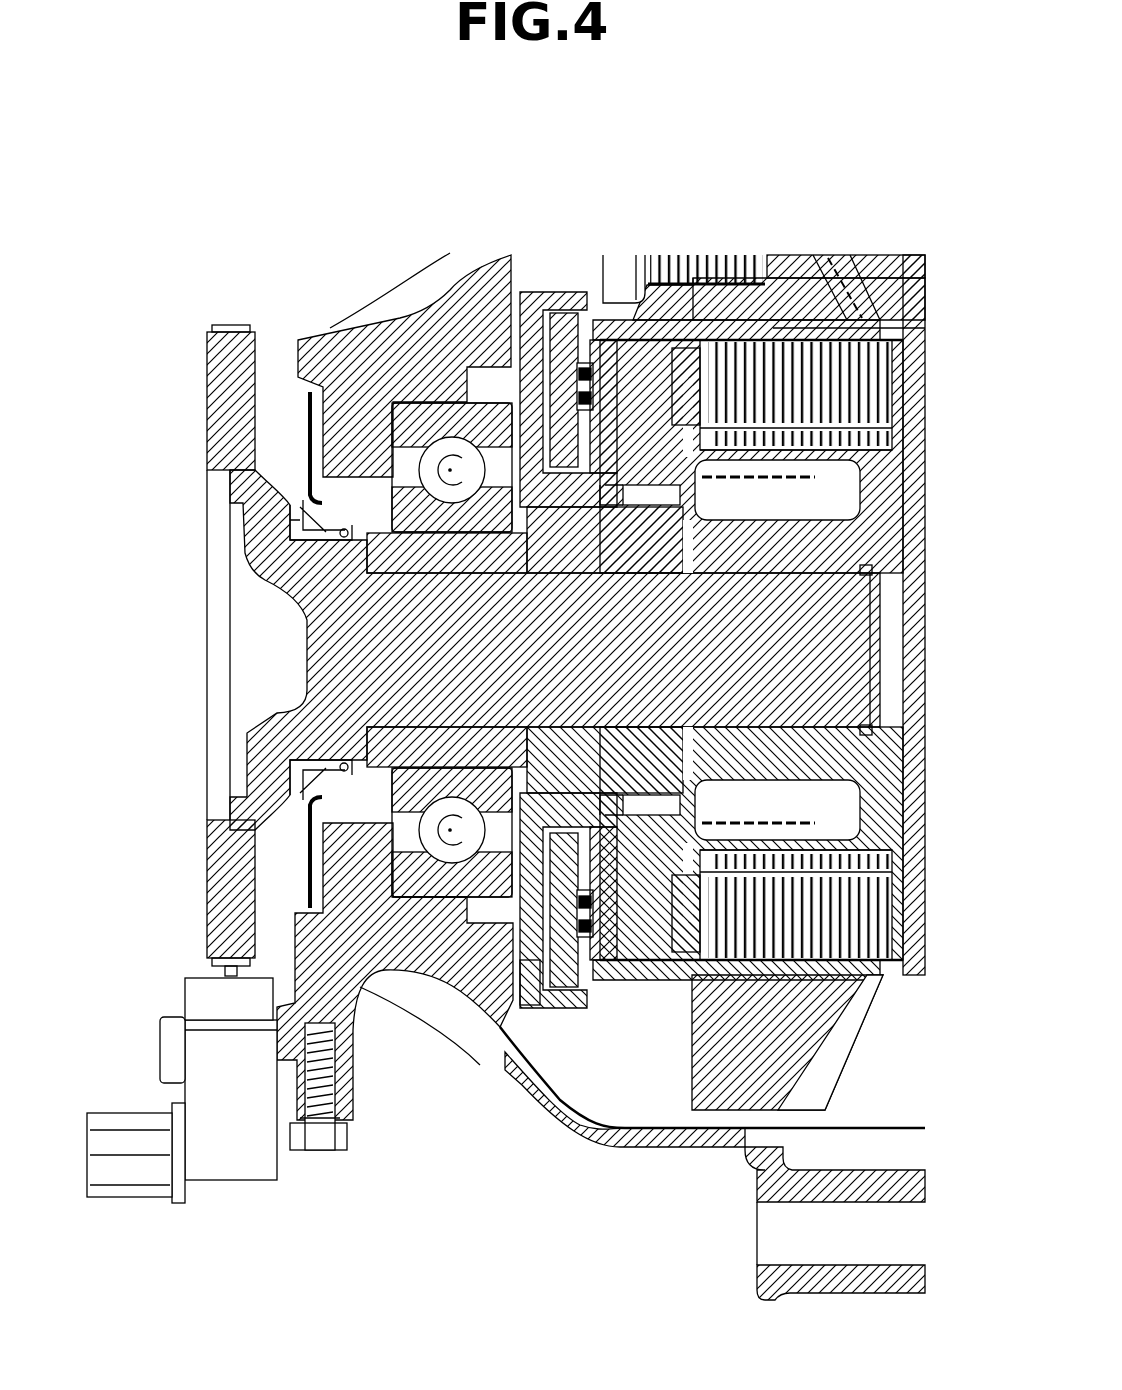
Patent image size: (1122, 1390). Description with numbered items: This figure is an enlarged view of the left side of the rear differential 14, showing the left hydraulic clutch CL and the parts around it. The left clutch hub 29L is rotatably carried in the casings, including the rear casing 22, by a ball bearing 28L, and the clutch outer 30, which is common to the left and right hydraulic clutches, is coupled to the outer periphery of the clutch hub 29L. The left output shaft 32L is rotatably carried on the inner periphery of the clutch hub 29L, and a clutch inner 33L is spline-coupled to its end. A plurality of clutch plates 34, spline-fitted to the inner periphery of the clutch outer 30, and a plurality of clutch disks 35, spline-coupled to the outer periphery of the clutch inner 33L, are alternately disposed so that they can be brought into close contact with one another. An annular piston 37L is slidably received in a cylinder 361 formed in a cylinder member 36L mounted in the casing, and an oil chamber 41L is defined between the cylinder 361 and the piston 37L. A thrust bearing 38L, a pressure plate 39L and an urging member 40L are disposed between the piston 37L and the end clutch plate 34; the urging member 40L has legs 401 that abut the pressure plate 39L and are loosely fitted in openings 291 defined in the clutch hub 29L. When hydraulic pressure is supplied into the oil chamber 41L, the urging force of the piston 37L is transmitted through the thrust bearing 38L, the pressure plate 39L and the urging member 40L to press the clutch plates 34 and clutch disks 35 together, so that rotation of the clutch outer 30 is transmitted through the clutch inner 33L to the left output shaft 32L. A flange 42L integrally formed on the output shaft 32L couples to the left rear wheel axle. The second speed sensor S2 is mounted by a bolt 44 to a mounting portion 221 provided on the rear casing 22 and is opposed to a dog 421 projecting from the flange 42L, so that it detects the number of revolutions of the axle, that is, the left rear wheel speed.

The rear differential 14 is at (380, 232).
The rear casing 22 is at (581, 1148).
The mounting portion 221 is at (352, 1040).
The ball bearing 28L is at (445, 573).
The left clutch hub 29L is at (458, 540).
The opening 291 is at (626, 955).
The clutch outer 30 is at (657, 300).
The left output shaft 32L is at (600, 672).
The clutch inner 33L is at (745, 575).
The clutch plate 34 is at (850, 960).
The clutch disk 35 is at (860, 955).
The cylinder 361 is at (538, 830).
The cylinder member 36L is at (545, 1015).
The annular piston 37L is at (552, 292).
The thrust bearing 38L is at (600, 390).
The pressure plate 39L is at (598, 460).
The urging member 40L is at (692, 960).
The leg 401 is at (640, 900).
The oil chamber 41L is at (515, 348).
The flange 42L is at (206, 424).
The dog 421 is at (240, 327).
The bolt 44 is at (318, 1140).
The left hydraulic clutch CL is at (795, 325).
The second speed sensor S2 is at (230, 1180).